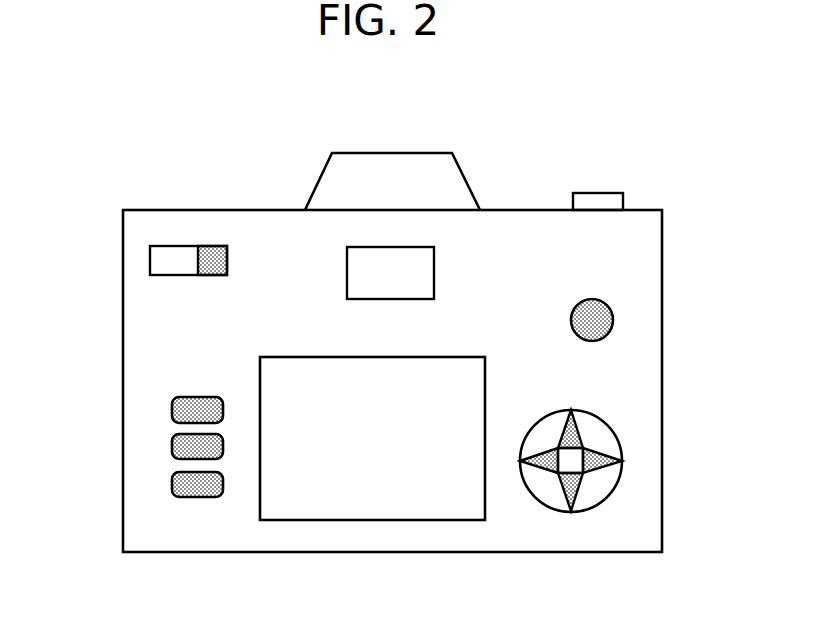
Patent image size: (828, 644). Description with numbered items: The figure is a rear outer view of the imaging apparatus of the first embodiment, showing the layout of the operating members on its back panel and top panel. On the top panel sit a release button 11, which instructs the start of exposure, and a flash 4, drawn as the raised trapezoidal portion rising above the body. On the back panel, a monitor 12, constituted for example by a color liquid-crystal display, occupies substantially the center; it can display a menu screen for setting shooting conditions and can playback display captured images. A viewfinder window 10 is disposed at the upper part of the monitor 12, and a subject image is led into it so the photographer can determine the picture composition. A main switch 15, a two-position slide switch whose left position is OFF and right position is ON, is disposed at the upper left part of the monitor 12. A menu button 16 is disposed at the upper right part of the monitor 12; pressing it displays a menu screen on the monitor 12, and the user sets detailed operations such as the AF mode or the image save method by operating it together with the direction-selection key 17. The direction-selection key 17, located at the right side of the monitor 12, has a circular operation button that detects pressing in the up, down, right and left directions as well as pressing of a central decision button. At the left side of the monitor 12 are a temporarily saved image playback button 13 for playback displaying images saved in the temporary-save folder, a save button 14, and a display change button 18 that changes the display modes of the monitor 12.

The flash 4 is at (467, 177).
The viewfinder window 10 is at (434, 272).
The release button 11 is at (597, 193).
The monitor 12 is at (372, 520).
The temporarily saved image playback button 13 is at (172, 410).
The save button 14 is at (172, 447).
The main switch 15 is at (177, 275).
The menu button 16 is at (593, 298).
The direction-selection key 17 is at (592, 495).
The display change button 18 is at (172, 485).